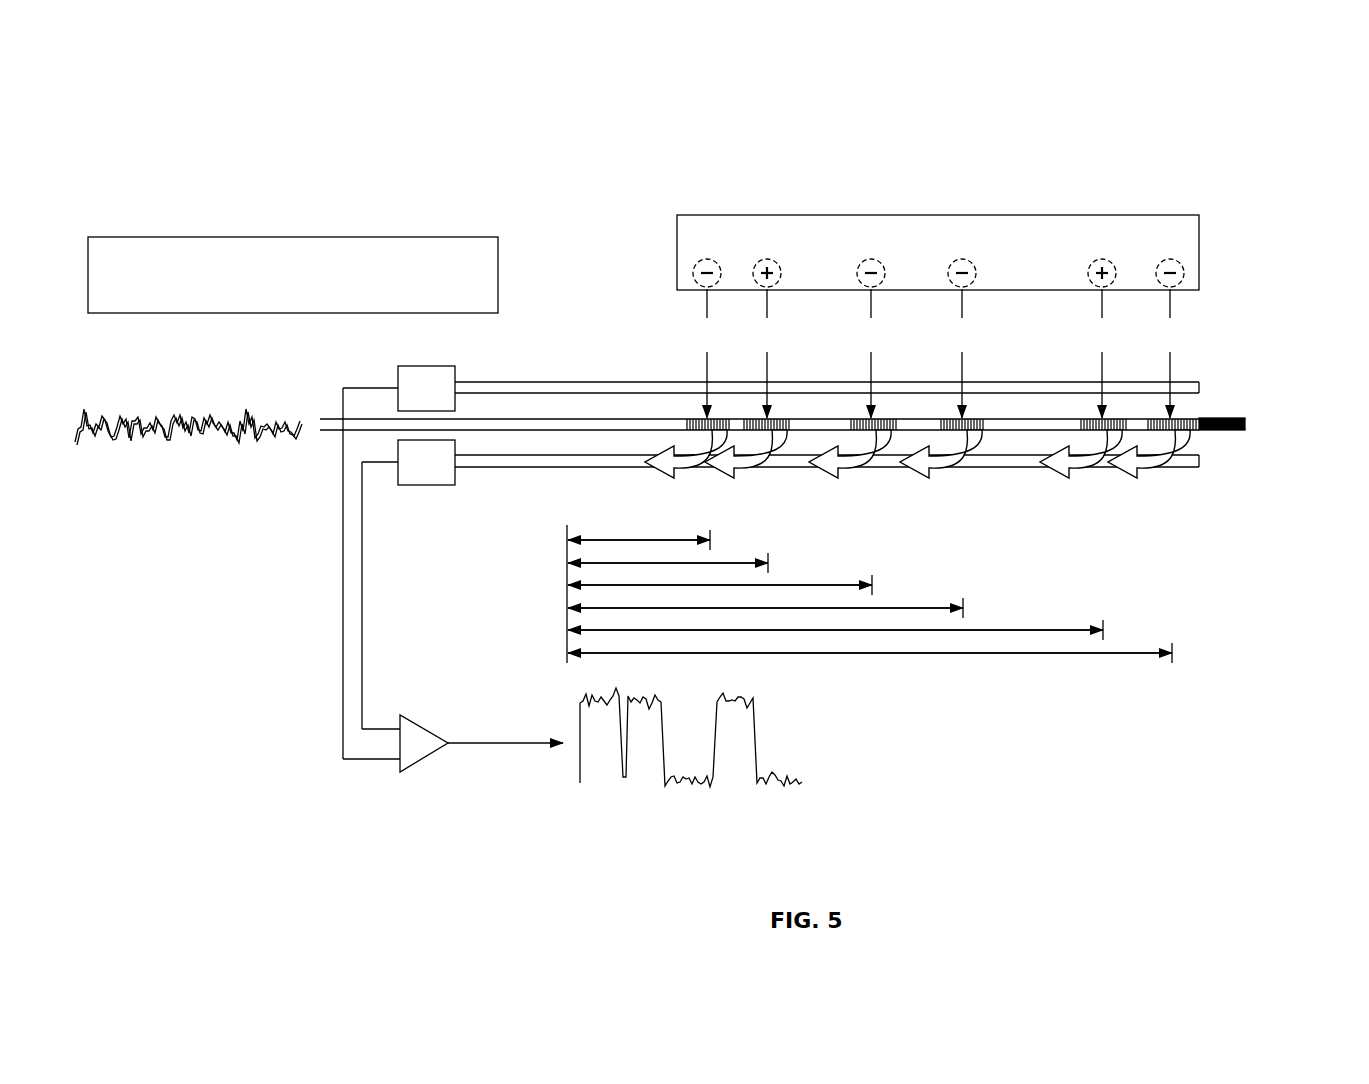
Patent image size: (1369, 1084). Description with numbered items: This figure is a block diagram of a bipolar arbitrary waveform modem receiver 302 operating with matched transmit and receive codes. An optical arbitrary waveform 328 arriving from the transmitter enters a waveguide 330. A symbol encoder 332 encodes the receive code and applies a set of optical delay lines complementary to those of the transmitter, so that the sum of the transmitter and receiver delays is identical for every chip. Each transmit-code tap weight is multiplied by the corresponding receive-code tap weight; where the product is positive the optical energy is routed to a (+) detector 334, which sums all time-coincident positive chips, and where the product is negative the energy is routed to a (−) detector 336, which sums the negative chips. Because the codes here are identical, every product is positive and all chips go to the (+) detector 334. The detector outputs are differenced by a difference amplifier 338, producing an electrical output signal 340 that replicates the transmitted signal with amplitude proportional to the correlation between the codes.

The bipolar arbitrary waveform modem receiver 302 is at (1262, 136).
The arbitrary waveform 328 is at (138, 453).
The waveguide 330 is at (331, 434).
The symbol encoder 332 is at (963, 214).
The (+) detector 334 is at (432, 487).
The (−) detector 336 is at (430, 364).
The difference amplifier 338 is at (427, 727).
The output signal 340 is at (795, 721).